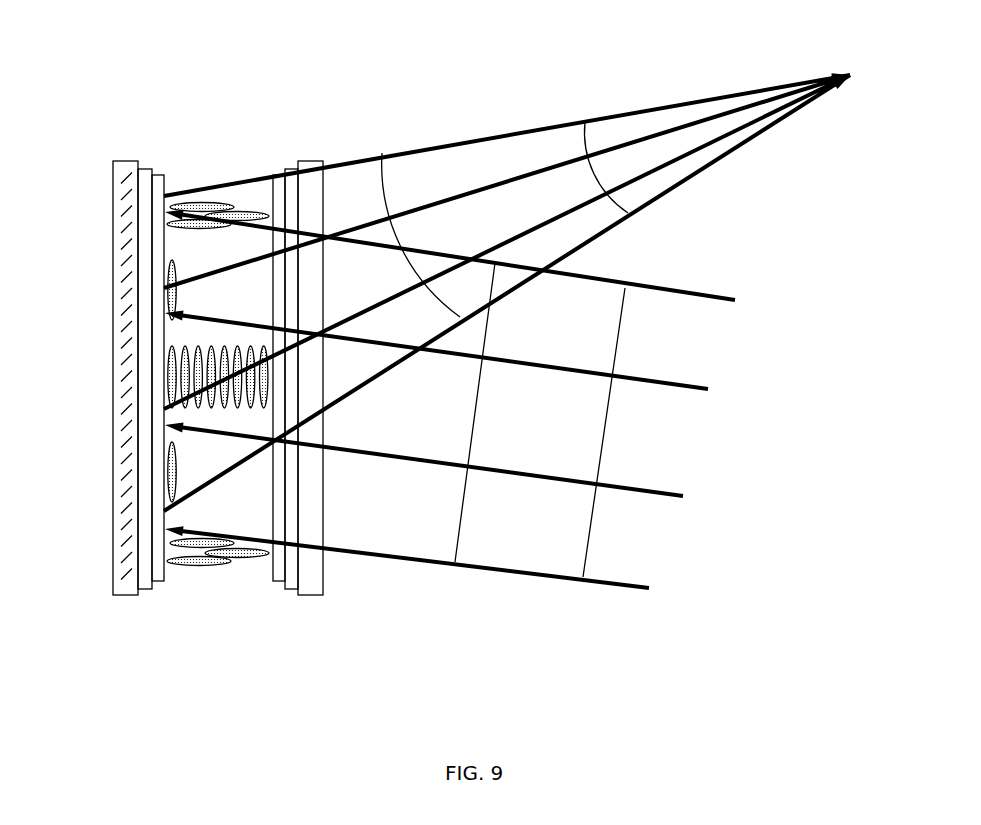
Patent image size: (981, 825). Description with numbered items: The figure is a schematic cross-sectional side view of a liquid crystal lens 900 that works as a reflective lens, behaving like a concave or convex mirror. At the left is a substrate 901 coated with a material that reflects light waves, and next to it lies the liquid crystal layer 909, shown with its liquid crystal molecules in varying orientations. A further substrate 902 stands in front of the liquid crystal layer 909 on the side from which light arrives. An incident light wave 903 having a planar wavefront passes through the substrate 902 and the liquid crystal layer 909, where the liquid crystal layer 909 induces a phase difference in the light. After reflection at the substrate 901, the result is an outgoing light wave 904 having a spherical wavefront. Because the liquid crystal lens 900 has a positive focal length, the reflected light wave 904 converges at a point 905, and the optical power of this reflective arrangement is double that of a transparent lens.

The liquid crystal lens 900 is at (290, 50).
The substrate 901 is at (115, 161).
The substrate 902 is at (303, 160).
The incident light wave 903 is at (618, 353).
The outgoing light wave 904 is at (586, 135).
The point 905 is at (851, 72).
The liquid crystal layer 909 is at (182, 173).